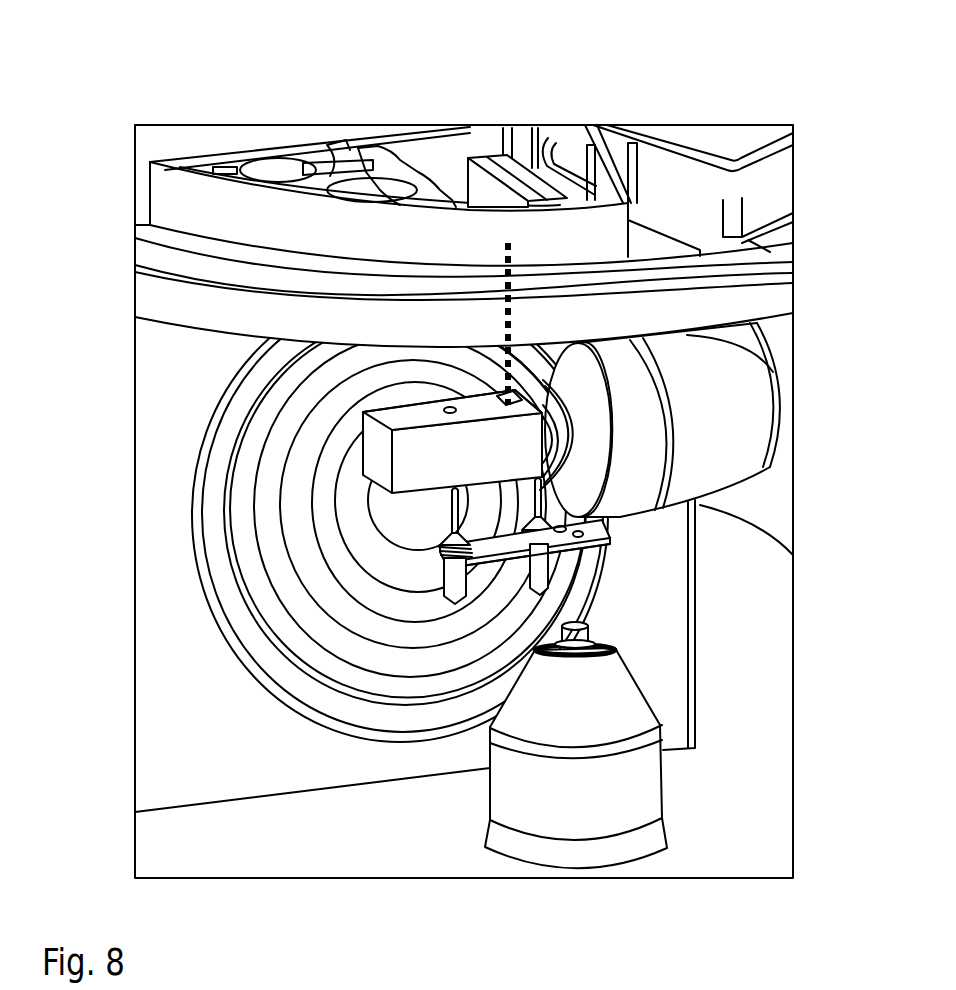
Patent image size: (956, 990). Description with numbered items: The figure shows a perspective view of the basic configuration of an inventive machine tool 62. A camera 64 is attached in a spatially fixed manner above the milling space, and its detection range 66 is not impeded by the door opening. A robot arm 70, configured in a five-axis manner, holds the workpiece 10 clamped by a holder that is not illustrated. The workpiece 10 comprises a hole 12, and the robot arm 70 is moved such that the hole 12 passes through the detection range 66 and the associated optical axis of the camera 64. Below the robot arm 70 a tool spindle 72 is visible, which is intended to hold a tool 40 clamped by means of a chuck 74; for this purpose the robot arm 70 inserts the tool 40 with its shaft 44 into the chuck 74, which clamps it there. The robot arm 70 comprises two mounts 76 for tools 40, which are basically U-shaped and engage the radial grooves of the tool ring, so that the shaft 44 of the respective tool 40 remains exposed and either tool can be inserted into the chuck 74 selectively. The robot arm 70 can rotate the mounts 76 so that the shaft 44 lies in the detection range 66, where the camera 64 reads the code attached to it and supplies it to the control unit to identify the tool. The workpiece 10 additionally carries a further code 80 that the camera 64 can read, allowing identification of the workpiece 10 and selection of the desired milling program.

The workpiece 10 is at (410, 460).
The hole 12 is at (362, 413).
The tool 40 is at (593, 524).
The shaft 44 is at (568, 567).
The machine tool 62 is at (329, 79).
The camera 64 is at (493, 167).
The detection range 66 is at (492, 375).
The robot arm 70 is at (742, 441).
The tool spindle 72 is at (612, 797).
The chuck 74 is at (573, 635).
The mounts 76 is at (487, 580).
The further code 80 is at (546, 411).